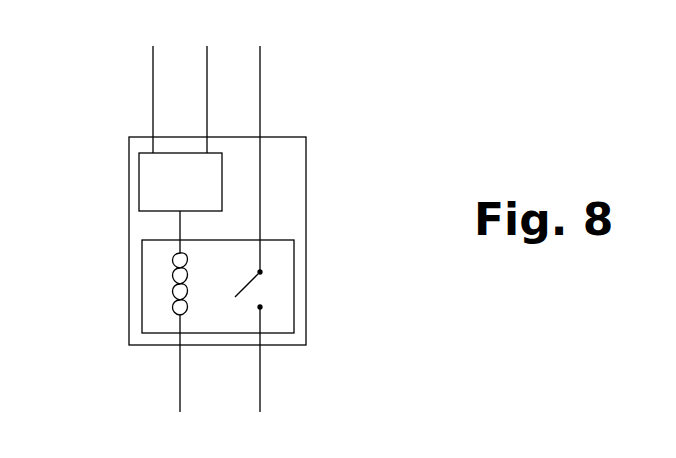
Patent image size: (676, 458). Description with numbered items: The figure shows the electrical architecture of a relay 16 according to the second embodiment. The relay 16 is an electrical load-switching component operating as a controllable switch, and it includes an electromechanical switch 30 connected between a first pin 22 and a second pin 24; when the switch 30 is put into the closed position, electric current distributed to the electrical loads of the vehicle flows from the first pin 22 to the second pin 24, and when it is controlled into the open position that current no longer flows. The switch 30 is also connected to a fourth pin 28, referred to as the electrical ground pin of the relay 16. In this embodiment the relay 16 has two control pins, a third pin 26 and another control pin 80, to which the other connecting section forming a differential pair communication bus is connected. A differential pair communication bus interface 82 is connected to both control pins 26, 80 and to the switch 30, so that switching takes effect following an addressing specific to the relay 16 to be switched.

The relay 16 is at (350, 201).
The differential pair communication bus interface 82 is at (194, 192).
The electromechanical switch 30 is at (294, 285).
The third pin 26 is at (153, 92).
The other control pin 80 is at (207, 70).
The first pin 22 is at (260, 66).
The fourth pin 28 is at (180, 400).
The second pin 24 is at (260, 396).